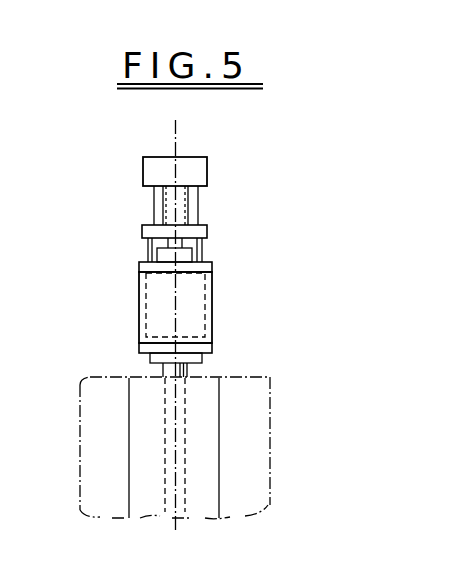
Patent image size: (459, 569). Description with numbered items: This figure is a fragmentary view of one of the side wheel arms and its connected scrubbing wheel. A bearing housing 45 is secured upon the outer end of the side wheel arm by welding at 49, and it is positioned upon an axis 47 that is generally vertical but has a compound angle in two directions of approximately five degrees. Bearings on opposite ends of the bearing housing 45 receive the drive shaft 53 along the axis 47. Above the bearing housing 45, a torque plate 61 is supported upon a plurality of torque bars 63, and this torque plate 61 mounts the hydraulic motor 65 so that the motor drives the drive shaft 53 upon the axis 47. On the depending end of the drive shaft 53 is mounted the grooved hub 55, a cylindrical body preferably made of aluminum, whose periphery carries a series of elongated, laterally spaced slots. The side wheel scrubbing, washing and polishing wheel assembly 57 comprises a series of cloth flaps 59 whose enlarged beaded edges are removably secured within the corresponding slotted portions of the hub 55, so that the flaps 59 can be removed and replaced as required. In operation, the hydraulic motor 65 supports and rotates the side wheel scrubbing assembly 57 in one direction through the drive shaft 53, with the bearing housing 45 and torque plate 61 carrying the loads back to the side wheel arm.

The axis 47 is at (178, 137).
The hydraulic motor 65 is at (200, 172).
The torque plate 61 is at (207, 229).
The torque bars 63 is at (212, 250).
The welding 49 is at (215, 278).
The bearing housing 45 is at (212, 328).
The drive shaft 53 is at (187, 372).
The side wheel scrubbing, washing and polishing wheel assembly 57 is at (270, 431).
The grooved hub 55 is at (129, 447).
The cloth flaps 59 is at (219, 466).